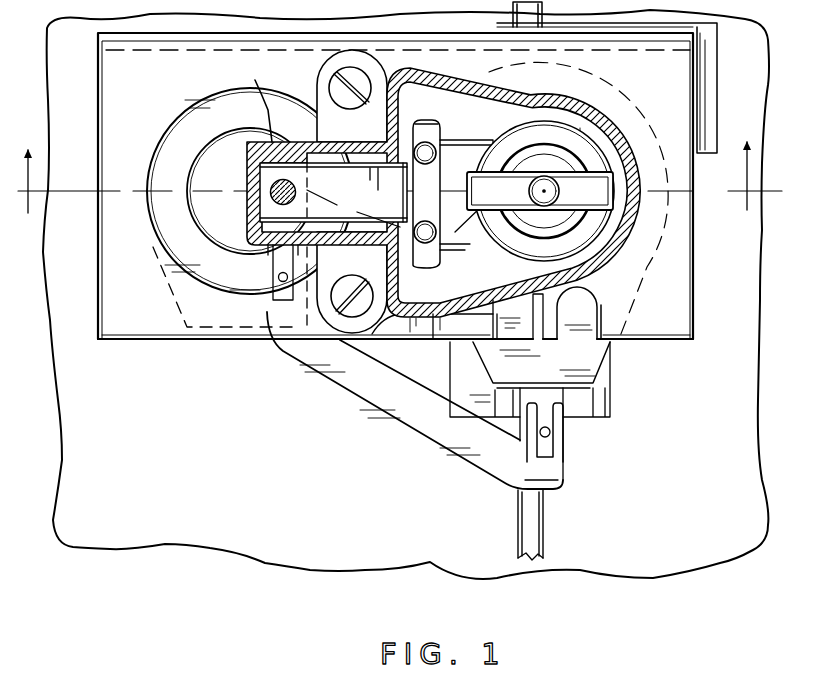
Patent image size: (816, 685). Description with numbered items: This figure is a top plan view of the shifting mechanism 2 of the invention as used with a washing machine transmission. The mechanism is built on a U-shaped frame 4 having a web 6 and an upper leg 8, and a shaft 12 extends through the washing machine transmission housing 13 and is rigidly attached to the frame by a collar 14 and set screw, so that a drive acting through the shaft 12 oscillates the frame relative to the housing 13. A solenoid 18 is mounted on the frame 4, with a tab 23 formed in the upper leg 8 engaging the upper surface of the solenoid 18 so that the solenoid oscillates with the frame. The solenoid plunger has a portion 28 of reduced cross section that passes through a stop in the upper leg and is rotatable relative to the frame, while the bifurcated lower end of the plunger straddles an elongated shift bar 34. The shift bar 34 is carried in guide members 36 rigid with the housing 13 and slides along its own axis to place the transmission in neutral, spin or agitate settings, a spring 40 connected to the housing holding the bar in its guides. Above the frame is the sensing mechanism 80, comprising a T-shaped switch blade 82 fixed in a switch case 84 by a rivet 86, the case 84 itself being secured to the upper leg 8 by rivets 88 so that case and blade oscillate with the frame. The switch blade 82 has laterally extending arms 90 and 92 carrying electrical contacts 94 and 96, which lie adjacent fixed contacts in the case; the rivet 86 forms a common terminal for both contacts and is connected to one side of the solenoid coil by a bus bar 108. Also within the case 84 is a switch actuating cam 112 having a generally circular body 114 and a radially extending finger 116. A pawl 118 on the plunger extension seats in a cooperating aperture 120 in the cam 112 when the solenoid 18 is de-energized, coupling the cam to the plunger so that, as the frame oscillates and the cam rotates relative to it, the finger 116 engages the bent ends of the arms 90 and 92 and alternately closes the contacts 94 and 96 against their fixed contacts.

The shifting mechanism 2 is at (118, 380).
The U-shaped frame 4 is at (86, 250).
The web 6 is at (176, 58).
The upper leg 8 is at (100, 94).
The shaft 12 is at (224, 176).
The washing machine transmission housing 13 is at (112, 459).
The collar 14 is at (170, 237).
The solenoid 18 is at (580, 350).
The tab 23 is at (548, 330).
The portion of reduced cross section 28 is at (556, 191).
The shift bar 34 is at (530, 530).
The guide members 36 is at (590, 406).
The spring 40 is at (710, 55).
The sensing mechanism 80 is at (432, 98).
The T-shaped switch blade 82 is at (354, 196).
The switch case 84 is at (255, 86).
The rivet 86 is at (271, 195).
The rivets 88 is at (330, 92).
The laterally extending arm 90 is at (422, 258).
The laterally extending arm 92 is at (412, 128).
The electrical contact 94 is at (440, 232).
The electrical contact 96 is at (432, 148).
The bus bar 108 is at (384, 418).
The switch actuating cam 112 is at (556, 144).
The generally circular body 114 is at (585, 142).
The radially extending finger 116 is at (507, 88).
The pawl 118 is at (532, 220).
The aperture 120 is at (590, 232).